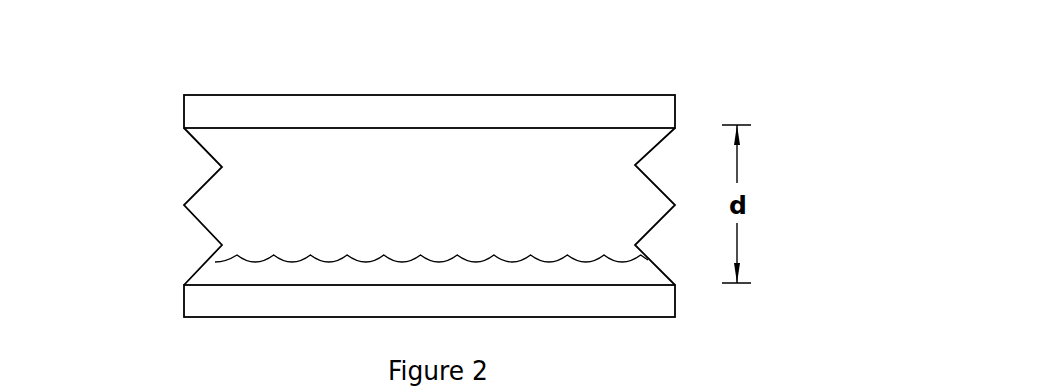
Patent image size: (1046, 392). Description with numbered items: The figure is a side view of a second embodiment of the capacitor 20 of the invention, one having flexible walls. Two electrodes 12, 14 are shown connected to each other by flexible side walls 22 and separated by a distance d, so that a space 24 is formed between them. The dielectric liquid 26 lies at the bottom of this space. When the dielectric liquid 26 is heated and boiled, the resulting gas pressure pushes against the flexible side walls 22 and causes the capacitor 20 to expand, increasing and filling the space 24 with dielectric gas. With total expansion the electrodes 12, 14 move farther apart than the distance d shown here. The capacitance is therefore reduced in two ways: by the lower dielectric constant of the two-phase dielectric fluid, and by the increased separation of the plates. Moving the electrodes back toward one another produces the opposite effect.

The capacitor 20 is at (335, 72).
The electrode 12 is at (645, 110).
The electrode 14 is at (648, 300).
The flexible side walls 22 is at (204, 188).
The space 24 is at (445, 215).
The dielectric liquid 26 is at (212, 268).